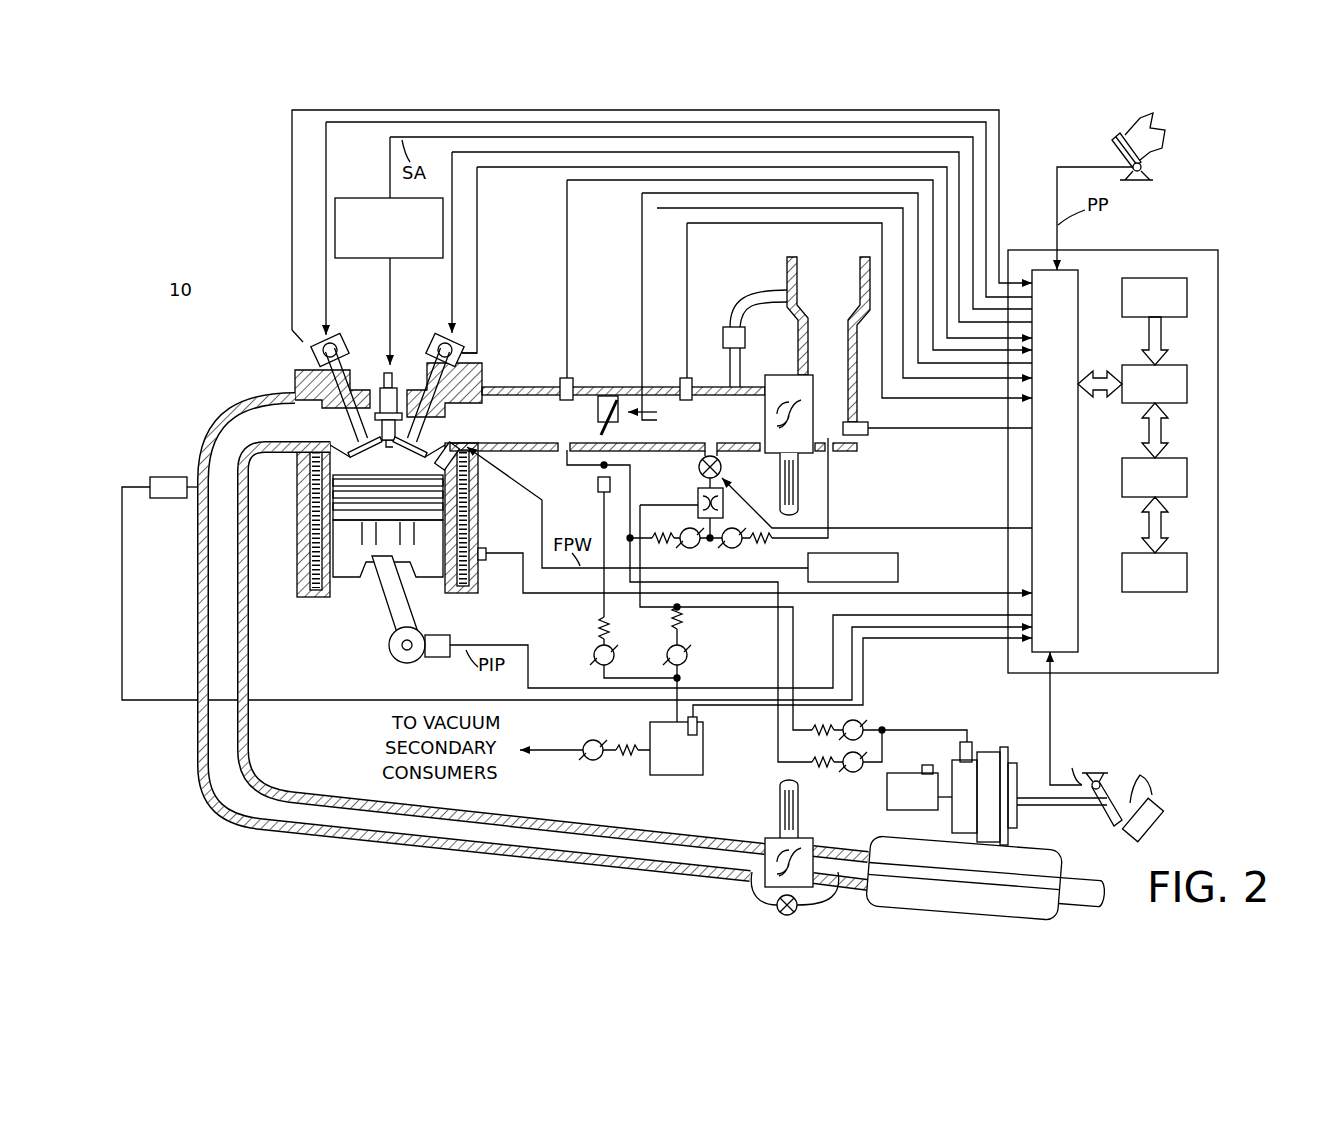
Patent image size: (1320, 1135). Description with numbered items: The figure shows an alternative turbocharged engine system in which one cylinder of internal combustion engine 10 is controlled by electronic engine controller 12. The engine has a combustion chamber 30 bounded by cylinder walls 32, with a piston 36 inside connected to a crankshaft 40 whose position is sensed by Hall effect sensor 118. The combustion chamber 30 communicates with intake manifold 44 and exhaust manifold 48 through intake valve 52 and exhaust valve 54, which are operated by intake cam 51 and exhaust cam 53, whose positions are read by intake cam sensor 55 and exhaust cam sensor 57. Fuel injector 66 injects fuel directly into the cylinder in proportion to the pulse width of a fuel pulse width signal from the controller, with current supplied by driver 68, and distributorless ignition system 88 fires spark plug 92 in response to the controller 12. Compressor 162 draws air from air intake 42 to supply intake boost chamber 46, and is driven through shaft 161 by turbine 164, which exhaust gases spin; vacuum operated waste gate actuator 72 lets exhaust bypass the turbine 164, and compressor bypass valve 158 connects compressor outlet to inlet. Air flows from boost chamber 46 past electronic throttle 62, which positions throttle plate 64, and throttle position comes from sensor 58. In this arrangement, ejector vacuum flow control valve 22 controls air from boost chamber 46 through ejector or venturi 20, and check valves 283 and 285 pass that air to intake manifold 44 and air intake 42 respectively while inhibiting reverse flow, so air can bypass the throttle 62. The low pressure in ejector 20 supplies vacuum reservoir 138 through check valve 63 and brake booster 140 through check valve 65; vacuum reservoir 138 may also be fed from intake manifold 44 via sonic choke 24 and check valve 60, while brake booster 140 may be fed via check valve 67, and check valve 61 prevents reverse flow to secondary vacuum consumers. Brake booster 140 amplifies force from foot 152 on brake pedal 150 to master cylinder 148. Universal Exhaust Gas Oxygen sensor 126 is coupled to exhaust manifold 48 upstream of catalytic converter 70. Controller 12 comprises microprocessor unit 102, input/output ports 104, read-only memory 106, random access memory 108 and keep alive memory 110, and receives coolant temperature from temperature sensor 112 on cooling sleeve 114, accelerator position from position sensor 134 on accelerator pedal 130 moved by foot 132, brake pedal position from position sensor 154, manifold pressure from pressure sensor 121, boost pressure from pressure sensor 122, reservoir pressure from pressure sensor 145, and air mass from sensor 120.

The internal combustion engine 10 is at (237, 325).
The electronic engine controller 12 is at (1218, 252).
The ejector or venturi 20 is at (698, 495).
The ejector vacuum flow control valve 22 is at (722, 466).
The sonic choke 24 is at (598, 484).
The combustion chamber 30 is at (387, 458).
The cylinder walls 32 is at (335, 592).
The piston 36 is at (373, 552).
The crankshaft 40 is at (397, 660).
The air intake 42 is at (840, 300).
The intake manifold 44 is at (537, 430).
The intake boost chamber 46 is at (707, 430).
The exhaust manifold 48 is at (279, 433).
The intake cam 51 is at (437, 342).
The intake valve 52 is at (430, 448).
The exhaust cam 53 is at (335, 342).
The exhaust valve 54 is at (300, 402).
The intake cam sensor 55 is at (462, 352).
The exhaust cam sensor 57 is at (315, 350).
The throttle position sensor 58 is at (622, 425).
The check valve 60 is at (612, 650).
The check valve 61 is at (590, 760).
The electronic throttle 62 is at (602, 396).
The check valve 63 is at (688, 655).
The throttle plate 64 is at (622, 395).
The check valve 65 is at (862, 723).
The fuel injector 66 is at (467, 458).
The check valve 67 is at (845, 760).
The driver 68 is at (898, 556).
The catalytic converter 70 is at (870, 900).
The vacuum operated waste gate actuator 72 is at (777, 905).
The distributorless ignition system 88 is at (350, 198).
The spark plug 92 is at (392, 385).
The microprocessor unit 102 is at (1187, 385).
The input/output ports 104 is at (1078, 272).
The read-only memory 106 is at (1187, 295).
The random access memory 108 is at (1187, 478).
The keep alive memory 110 is at (1187, 570).
The temperature sensor 112 is at (497, 534).
The cooling sleeve 114 is at (470, 594).
The Hall effect sensor 118 is at (432, 658).
The air mass sensor 120 is at (876, 441).
The pressure sensor 121 is at (562, 380).
The pressure sensor 122 is at (705, 372).
The Universal Exhaust Gas Oxygen sensor 126 is at (150, 480).
The accelerator pedal 130 is at (1118, 142).
The foot 132 is at (1165, 132).
The position sensor 134 is at (1155, 167).
The vacuum reservoir 138 is at (650, 722).
The brake booster 140 is at (990, 752).
The pressure sensor 145 is at (697, 724).
The master cylinder 148 is at (887, 780).
The brake pedal 150 is at (1105, 828).
The foot 152 is at (1165, 820).
The position sensor 154 is at (1072, 718).
The compressor bypass valve 158 is at (725, 330).
The shaft 161 is at (780, 490).
The compressor 162 is at (803, 375).
The turbine 164 is at (767, 838).
The check valve 283 is at (685, 546).
The check valve 285 is at (755, 548).